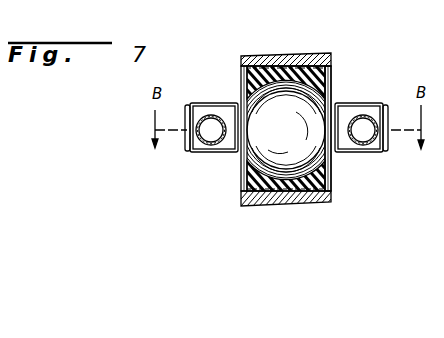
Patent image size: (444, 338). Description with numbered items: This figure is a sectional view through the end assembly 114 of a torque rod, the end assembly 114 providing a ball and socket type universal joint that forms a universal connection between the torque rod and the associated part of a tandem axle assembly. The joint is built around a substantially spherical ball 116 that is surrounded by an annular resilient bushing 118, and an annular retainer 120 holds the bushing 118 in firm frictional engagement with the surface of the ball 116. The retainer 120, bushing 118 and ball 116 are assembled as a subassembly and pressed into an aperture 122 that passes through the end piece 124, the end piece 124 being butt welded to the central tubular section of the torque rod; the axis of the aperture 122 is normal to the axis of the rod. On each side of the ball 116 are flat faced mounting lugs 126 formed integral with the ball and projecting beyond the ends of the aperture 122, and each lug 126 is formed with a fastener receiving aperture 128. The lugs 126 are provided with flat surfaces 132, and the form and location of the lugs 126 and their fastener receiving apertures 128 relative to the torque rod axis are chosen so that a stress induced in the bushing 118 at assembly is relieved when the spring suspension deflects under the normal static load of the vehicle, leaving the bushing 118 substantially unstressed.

The end assembly 114 is at (276, 207).
The ball 116 is at (246, 91).
The annular resilient bushing 118 is at (244, 68).
The annular retainer 120 is at (331, 73).
The aperture 122 is at (332, 192).
The end piece 124 is at (300, 53).
The mounting lug 126 is at (188, 152).
The fastener receiving aperture 128 is at (212, 140).
The flat surface 132 is at (199, 106).